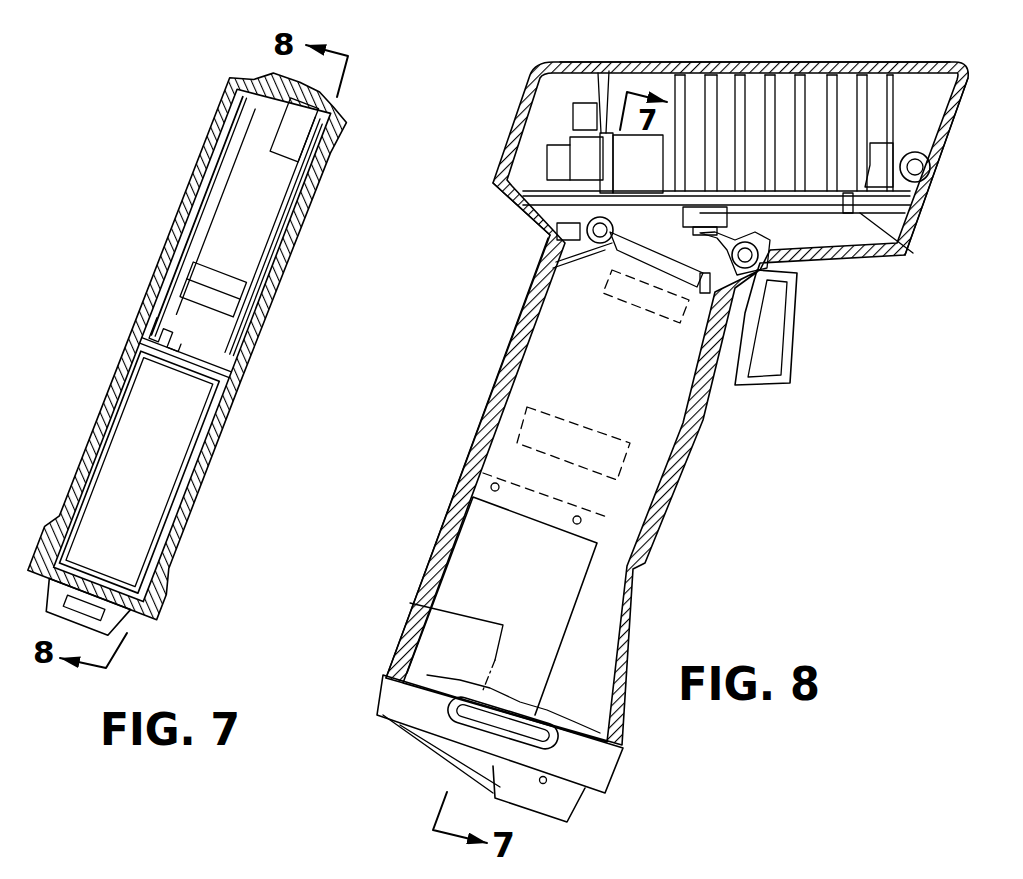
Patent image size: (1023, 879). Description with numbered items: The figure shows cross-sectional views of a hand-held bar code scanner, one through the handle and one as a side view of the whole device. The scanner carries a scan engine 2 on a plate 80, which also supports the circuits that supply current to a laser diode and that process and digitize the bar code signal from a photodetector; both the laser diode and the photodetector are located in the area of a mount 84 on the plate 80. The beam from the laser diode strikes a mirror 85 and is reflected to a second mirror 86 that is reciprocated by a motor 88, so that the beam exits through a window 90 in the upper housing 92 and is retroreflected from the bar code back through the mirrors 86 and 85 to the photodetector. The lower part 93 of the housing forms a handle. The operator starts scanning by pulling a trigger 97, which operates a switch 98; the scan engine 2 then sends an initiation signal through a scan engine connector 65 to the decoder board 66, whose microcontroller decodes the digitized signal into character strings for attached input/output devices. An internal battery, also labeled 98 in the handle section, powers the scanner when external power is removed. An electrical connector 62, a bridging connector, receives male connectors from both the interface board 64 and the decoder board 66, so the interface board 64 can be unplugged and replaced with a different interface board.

In FIG. 8, the scan engine 2 is at (746, 190).
In FIG. 7, the electrical connector 62 is at (230, 287).
In FIG. 8, the electrical connector 62 is at (597, 428).
In FIG. 7, the interface board 64 is at (283, 200).
In FIG. 7, the scan engine connector 65 is at (293, 130).
In FIG. 7, the decoder board 66 is at (197, 237).
In FIG. 8, the plate 80 is at (850, 215).
In FIG. 8, the mount 84 is at (531, 222).
In FIG. 8, the mirror 85 is at (953, 160).
In FIG. 8, the mirror 86 is at (586, 118).
In FIG. 8, the motor 88 is at (557, 152).
In FIG. 8, the window 90 is at (958, 103).
In FIG. 8, the upper housing 92 is at (665, 62).
In FIG. 7, the lower part of the housing 93 is at (97, 410).
In FIG. 8, the lower part of the housing 93 is at (441, 540).
In FIG. 8, the trigger 97 is at (795, 320).
In FIG. 7, the switch 98 is at (173, 453).
In FIG. 8, the switch 98 is at (733, 225).